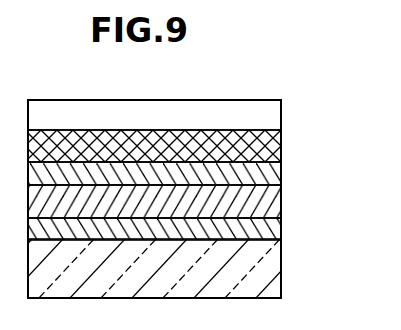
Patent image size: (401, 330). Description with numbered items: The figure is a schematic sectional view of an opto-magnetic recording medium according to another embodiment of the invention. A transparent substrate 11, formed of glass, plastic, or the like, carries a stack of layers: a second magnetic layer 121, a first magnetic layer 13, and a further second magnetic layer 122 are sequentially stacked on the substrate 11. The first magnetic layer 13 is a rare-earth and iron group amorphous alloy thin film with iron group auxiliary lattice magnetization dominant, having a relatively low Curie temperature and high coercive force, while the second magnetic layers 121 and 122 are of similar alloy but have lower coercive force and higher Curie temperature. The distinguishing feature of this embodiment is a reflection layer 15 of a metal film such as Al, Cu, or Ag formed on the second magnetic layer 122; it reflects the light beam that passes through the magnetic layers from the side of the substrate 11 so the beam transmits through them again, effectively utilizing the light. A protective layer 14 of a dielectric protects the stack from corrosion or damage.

The transparent substrate 11 is at (270, 266).
The second magnetic layer 121 is at (272, 232).
The first magnetic layer 13 is at (272, 205).
The second magnetic layer 122 is at (275, 175).
The reflection layer 15 is at (281, 142).
The protective layer 14 is at (275, 113).